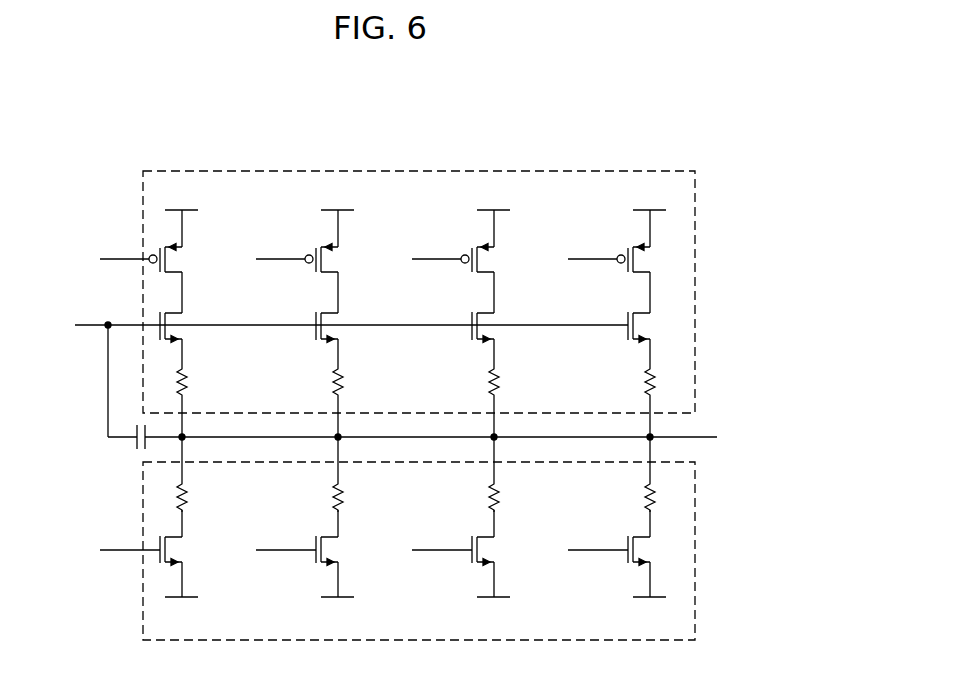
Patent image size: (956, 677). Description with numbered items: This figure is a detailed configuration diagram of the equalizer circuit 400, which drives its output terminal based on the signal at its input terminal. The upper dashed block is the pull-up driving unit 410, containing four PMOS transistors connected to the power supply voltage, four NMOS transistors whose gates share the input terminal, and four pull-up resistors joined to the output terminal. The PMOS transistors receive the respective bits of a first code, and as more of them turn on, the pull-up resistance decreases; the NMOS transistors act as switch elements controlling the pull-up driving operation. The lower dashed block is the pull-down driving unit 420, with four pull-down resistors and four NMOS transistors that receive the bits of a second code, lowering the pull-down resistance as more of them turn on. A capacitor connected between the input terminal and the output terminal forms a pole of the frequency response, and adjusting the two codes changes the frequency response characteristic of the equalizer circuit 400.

The equalizer circuit 400 is at (427, 388).
The pull-up driving unit 410 is at (695, 292).
The pull-down driving unit 420 is at (695, 552).